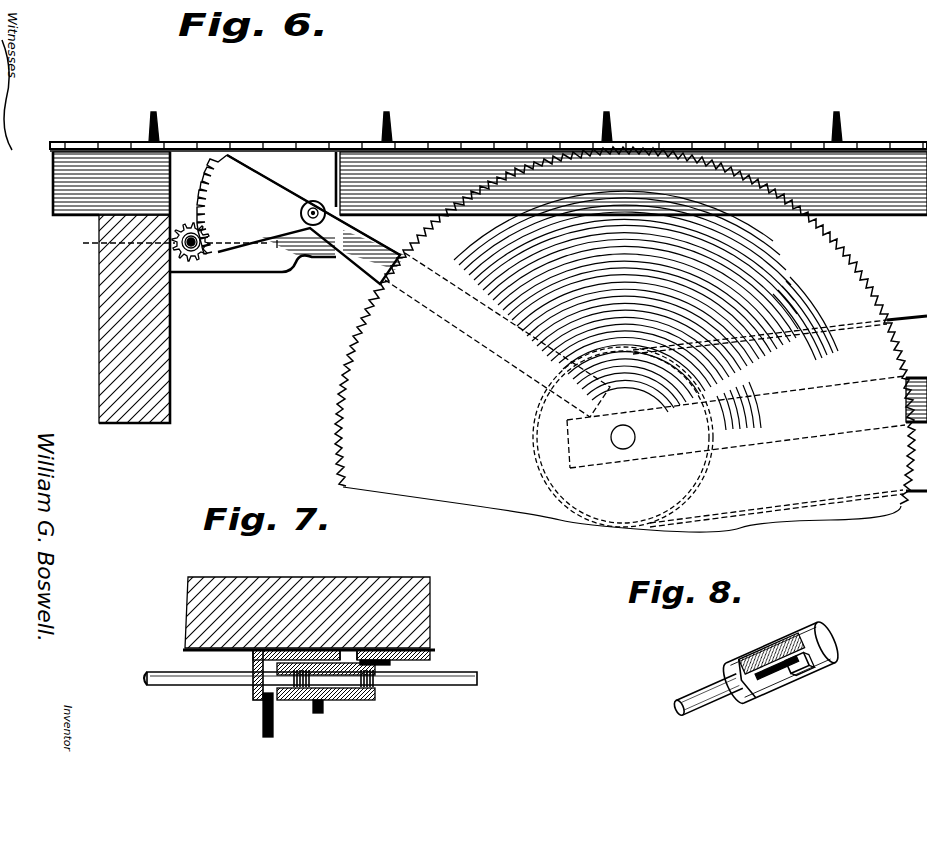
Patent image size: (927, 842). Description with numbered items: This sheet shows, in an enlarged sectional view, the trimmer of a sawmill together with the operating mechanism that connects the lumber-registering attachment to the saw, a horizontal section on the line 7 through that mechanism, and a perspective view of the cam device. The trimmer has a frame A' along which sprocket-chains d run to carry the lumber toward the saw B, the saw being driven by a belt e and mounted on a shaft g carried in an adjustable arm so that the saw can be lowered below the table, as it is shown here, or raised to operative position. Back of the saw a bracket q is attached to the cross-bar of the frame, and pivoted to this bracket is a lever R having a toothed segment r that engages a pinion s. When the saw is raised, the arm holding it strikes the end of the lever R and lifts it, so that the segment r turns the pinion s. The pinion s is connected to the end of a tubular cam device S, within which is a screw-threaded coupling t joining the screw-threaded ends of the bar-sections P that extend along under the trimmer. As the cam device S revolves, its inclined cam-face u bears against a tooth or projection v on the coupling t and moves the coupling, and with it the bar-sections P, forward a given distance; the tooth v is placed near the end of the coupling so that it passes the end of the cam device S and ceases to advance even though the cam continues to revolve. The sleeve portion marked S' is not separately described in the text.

In FIG. 6, the section line 7 is at (174, 251).
In FIG. 6, the bracket q is at (202, 204).
In FIG. 7, the bracket q is at (262, 725).
In FIG. 6, the toothed segment r is at (311, 219).
In FIG. 6, the pinion s is at (191, 240).
In FIG. 7, the pinion s is at (250, 705).
In FIG. 6, the bar-sections P is at (196, 248).
In FIG. 7, the bar-sections P is at (423, 696).
In FIG. 8, the bar-sections P is at (704, 687).
In FIG. 6, the sleeve S' is at (184, 268).
In FIG. 7, the sleeve S' is at (327, 699).
In FIG. 6, the frame A' is at (490, 287).
In FIG. 7, the frame A' is at (309, 602).
In FIG. 6, the lever R is at (323, 220).
In FIG. 6, the saw B is at (625, 339).
In FIG. 6, the sprocket-chains d is at (684, 138).
In FIG. 6, the belt e is at (780, 411).
In FIG. 6, the saw shaft g is at (633, 435).
In FIG. 7, the screw-threaded coupling t is at (344, 694).
In FIG. 8, the screw-threaded coupling t is at (774, 666).
In FIG. 8, the inclined cam-face u is at (760, 705).
In FIG. 7, the tooth or projection v is at (385, 671).
In FIG. 8, the tooth or projection v is at (805, 702).
In FIG. 8, the tubular cam device S is at (775, 651).